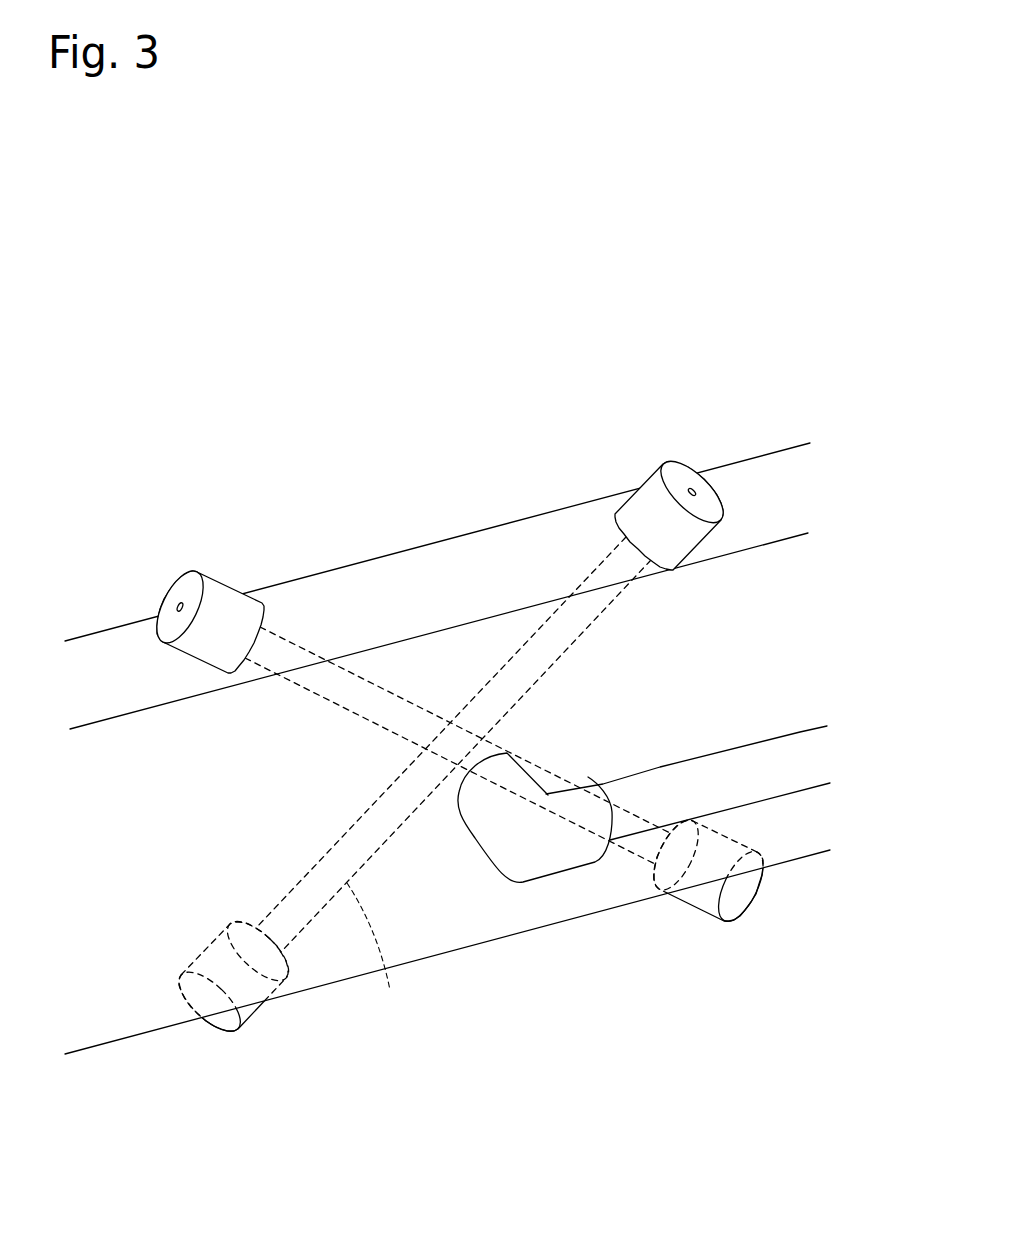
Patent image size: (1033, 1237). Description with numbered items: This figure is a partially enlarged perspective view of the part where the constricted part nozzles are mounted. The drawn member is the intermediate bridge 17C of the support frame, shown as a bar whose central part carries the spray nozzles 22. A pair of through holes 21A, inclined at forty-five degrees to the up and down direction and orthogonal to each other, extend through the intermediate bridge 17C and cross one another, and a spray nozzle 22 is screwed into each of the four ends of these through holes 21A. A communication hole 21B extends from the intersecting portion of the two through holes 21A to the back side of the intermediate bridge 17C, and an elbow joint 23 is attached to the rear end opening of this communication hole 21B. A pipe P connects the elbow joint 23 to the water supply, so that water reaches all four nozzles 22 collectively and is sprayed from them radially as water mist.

The intermediate bridge 17C is at (112, 644).
The nozzle 22 is at (219, 597).
The through hole 21A is at (397, 740).
The communication hole 21B is at (451, 787).
The elbow joint 23 is at (586, 778).
The pipe P is at (768, 758).